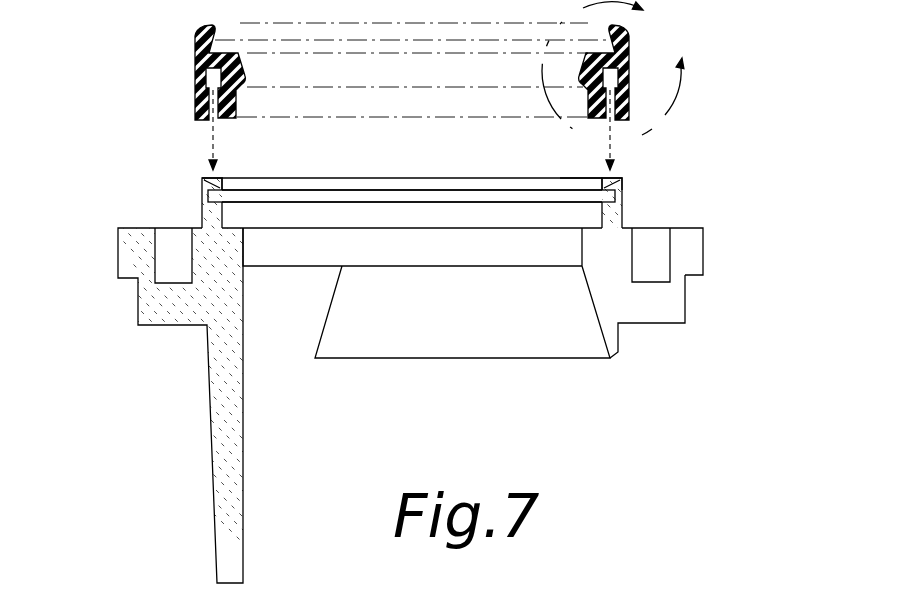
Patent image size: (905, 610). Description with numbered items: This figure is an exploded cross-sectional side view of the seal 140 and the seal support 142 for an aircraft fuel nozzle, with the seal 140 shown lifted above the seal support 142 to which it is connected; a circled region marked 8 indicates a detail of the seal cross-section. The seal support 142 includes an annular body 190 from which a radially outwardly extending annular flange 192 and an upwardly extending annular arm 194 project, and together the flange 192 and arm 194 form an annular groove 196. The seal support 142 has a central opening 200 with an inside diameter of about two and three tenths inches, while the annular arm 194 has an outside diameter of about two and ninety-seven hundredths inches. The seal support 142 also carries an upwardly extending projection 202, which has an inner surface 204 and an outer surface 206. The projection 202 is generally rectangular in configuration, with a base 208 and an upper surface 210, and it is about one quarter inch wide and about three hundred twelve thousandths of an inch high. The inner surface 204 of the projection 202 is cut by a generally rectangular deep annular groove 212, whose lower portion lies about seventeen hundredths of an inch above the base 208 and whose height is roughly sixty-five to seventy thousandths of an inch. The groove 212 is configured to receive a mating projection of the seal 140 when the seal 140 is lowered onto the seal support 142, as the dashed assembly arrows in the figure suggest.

The detail circle for FIG. 8 is at (613, 69).
The seal 140 is at (125, 82).
The seal support 142 is at (88, 322).
The annular body 190 is at (605, 293).
The annular flange 192 is at (673, 302).
The annular arm 194 is at (697, 241).
The annular groove 196 is at (658, 230).
The opening 200 is at (408, 162).
The projection 202 is at (622, 216).
The inner surface 204 is at (600, 183).
The outer surface 206 is at (624, 186).
The base 208 is at (200, 228).
The upper surface 210 is at (204, 177).
The annular groove 212 is at (232, 196).